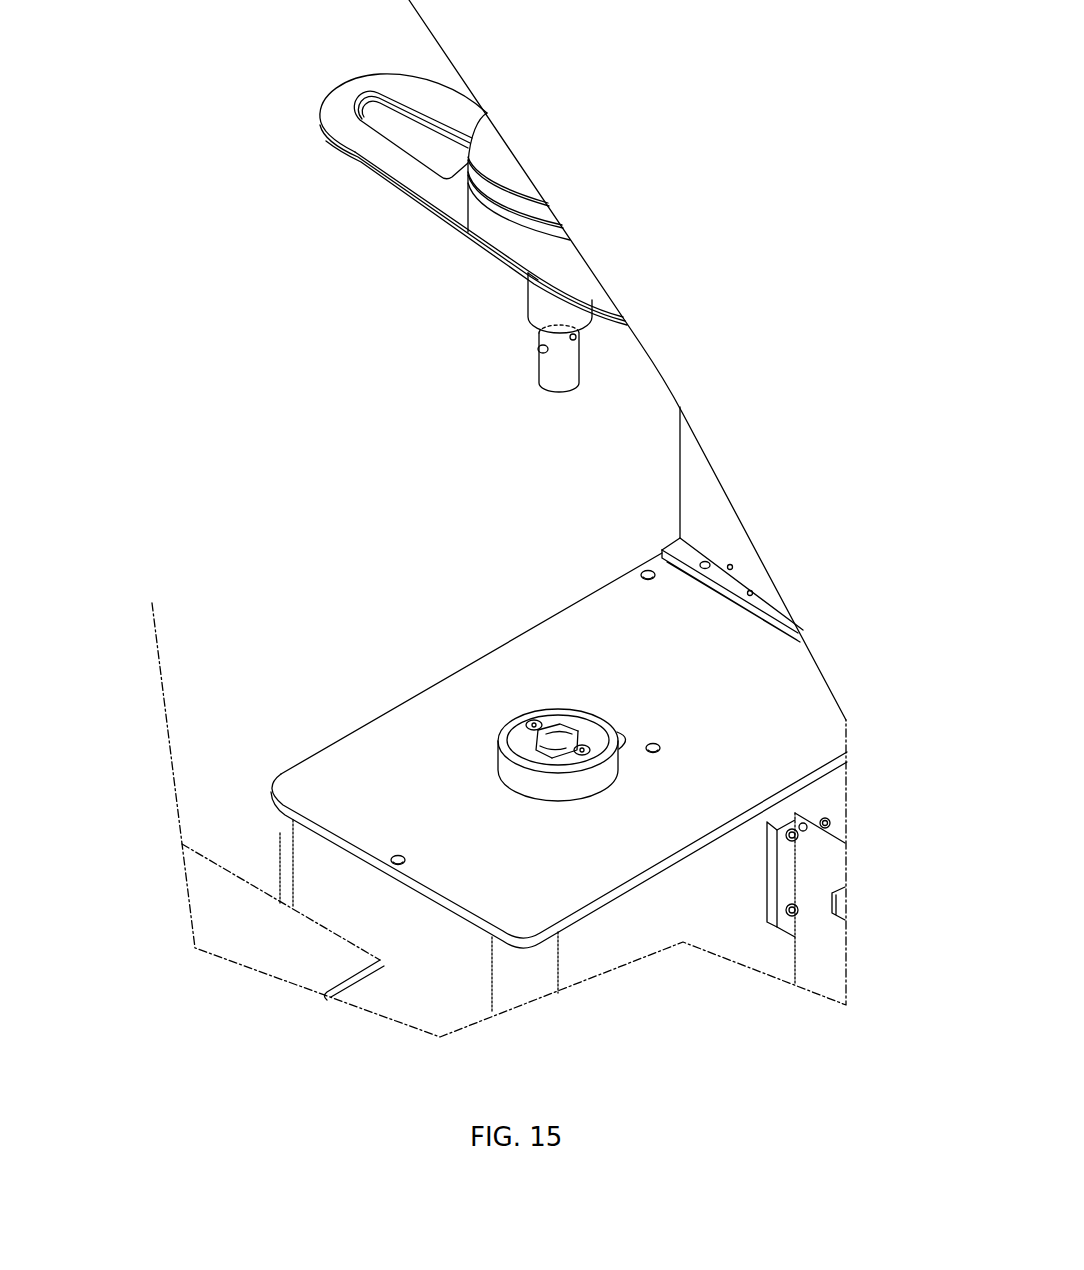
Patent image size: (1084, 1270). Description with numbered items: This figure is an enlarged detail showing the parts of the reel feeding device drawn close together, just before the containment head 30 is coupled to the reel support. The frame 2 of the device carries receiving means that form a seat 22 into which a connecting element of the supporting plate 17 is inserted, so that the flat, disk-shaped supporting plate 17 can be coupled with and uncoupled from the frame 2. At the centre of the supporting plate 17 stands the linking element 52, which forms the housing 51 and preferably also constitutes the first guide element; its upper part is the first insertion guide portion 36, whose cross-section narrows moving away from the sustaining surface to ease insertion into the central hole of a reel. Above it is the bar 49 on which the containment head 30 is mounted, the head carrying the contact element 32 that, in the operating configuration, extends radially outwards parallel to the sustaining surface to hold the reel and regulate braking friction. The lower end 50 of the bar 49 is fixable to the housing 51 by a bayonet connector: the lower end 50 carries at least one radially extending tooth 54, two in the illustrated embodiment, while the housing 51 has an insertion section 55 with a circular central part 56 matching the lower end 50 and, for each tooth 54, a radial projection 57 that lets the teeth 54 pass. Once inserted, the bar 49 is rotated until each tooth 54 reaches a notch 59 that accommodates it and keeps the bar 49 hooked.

The frame 2 is at (570, 887).
The supporting plate 17 is at (252, 935).
The seat 22 is at (653, 745).
The containment head 30 is at (450, 236).
The contact element 32 is at (338, 110).
The first insertion guide portion 36 is at (502, 733).
The bar 49 is at (560, 312).
The lower end 50 is at (555, 369).
The housing 51 is at (556, 757).
The linking element 52 is at (563, 790).
The tooth 54 is at (522, 357).
The insertion section 55 is at (535, 740).
The central part 56 is at (575, 750).
The radial projection 57 is at (577, 731).
The notch 59 is at (558, 727).